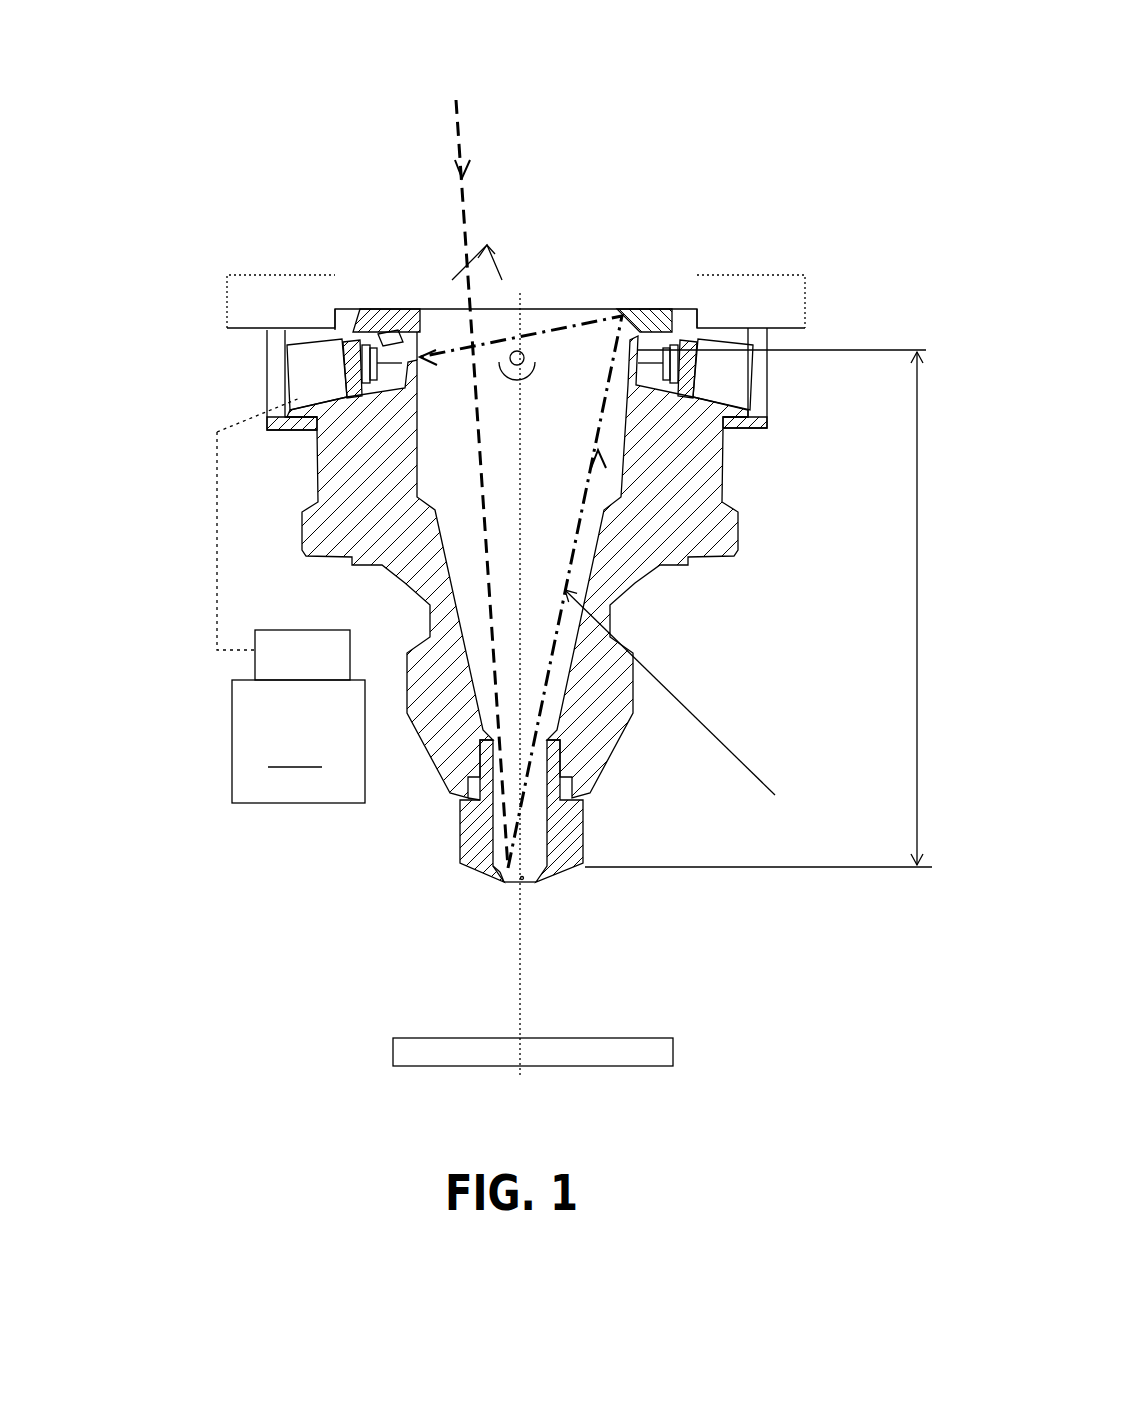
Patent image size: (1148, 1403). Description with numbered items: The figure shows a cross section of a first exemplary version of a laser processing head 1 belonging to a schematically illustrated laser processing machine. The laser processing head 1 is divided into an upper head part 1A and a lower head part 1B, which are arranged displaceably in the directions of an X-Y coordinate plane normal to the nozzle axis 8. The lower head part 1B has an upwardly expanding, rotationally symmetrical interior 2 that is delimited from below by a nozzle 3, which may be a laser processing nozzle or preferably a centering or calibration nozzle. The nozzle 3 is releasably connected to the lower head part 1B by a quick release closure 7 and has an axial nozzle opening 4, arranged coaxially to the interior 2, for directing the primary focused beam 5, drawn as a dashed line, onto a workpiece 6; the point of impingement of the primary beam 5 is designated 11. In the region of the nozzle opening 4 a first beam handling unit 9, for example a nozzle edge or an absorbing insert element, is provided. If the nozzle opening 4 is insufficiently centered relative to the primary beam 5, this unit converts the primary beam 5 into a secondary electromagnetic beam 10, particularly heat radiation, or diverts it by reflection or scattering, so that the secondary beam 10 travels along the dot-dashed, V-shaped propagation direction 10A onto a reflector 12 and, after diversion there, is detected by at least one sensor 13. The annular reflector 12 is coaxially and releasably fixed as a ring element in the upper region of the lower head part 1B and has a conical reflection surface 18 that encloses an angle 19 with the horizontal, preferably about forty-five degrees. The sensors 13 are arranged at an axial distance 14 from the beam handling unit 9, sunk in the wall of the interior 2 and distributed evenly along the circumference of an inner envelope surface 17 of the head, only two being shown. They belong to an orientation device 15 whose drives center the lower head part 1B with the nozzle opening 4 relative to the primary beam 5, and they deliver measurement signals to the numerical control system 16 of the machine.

The laser processing head 1 is at (852, 148).
The upper head part 1A is at (235, 255).
The lower head part 1B is at (748, 663).
The interior 2 is at (558, 427).
The nozzle 3 is at (565, 815).
The nozzle opening 4 is at (525, 877).
The primary focused beam 5 is at (458, 140).
The workpiece 6 is at (573, 1048).
The quick release closure 7 is at (445, 793).
The nozzle axis 8 is at (523, 968).
The first beam handling unit 9 is at (495, 870).
The secondary electromagnetic beam 10 is at (553, 673).
The propagation direction 10A is at (701, 712).
The point of impingement 11 is at (490, 880).
The reflector 12 is at (388, 322).
The sensor 13 is at (303, 360).
The axial distance 14 is at (915, 575).
The orientation device 15 is at (210, 374).
The CNC system 16 is at (255, 675).
The inner envelope surface 17 is at (500, 567).
The conical reflection surface 18 is at (420, 323).
The angle 19 is at (502, 280).